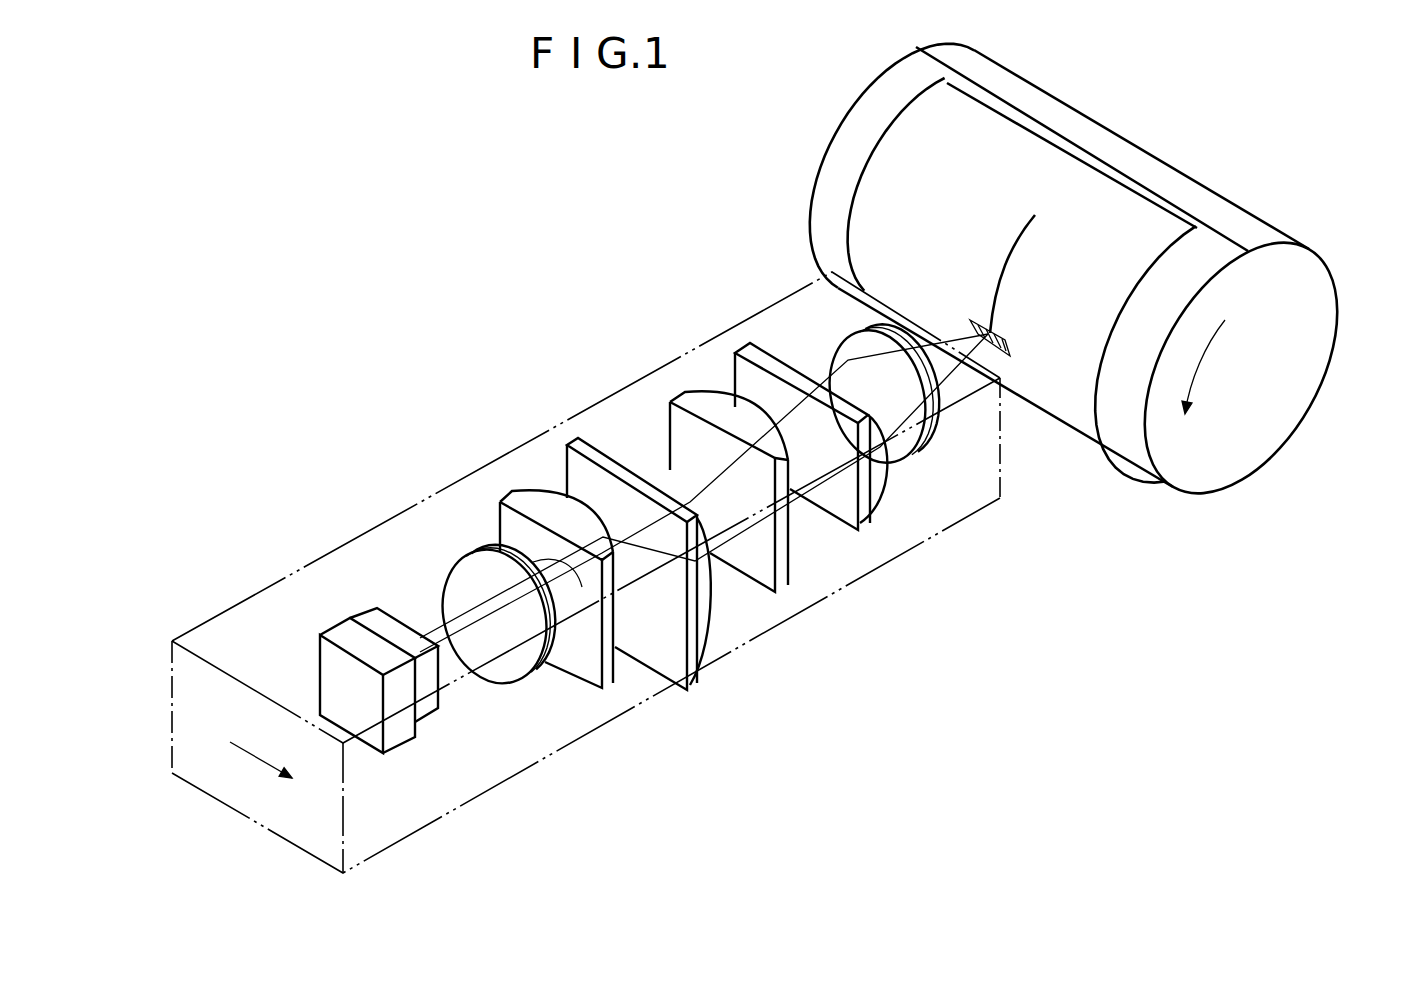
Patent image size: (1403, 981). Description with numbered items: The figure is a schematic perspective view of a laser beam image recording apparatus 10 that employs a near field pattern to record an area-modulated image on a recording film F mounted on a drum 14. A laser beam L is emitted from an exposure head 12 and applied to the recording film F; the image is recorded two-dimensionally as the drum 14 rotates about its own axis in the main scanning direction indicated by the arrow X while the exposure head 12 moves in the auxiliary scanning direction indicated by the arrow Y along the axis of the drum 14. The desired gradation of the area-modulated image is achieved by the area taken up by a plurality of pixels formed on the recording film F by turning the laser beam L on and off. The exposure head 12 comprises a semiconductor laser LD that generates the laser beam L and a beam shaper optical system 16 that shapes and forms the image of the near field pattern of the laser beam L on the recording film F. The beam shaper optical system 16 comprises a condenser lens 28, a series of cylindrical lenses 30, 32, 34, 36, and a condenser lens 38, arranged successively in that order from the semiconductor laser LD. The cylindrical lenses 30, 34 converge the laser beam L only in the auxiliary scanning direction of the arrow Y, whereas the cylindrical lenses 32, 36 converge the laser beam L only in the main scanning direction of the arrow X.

The laser beam image recording apparatus 10 is at (1152, 132).
The exposure head 12 is at (586, 705).
The drum 14 is at (1313, 313).
The beam shaper optical system 16 is at (632, 415).
The condenser lens 28 is at (487, 548).
The cylindrical lens 30 is at (528, 490).
The cylindrical lens 32 is at (590, 448).
The cylindrical lens 34 is at (700, 403).
The cylindrical lens 36 is at (873, 505).
The condenser lens 38 is at (937, 427).
The semiconductor laser LD is at (378, 624).
The laser beam L is at (447, 633).
The recording film F is at (1128, 237).
The main scanning direction X is at (1207, 367).
The auxiliary scanning direction Y is at (261, 767).